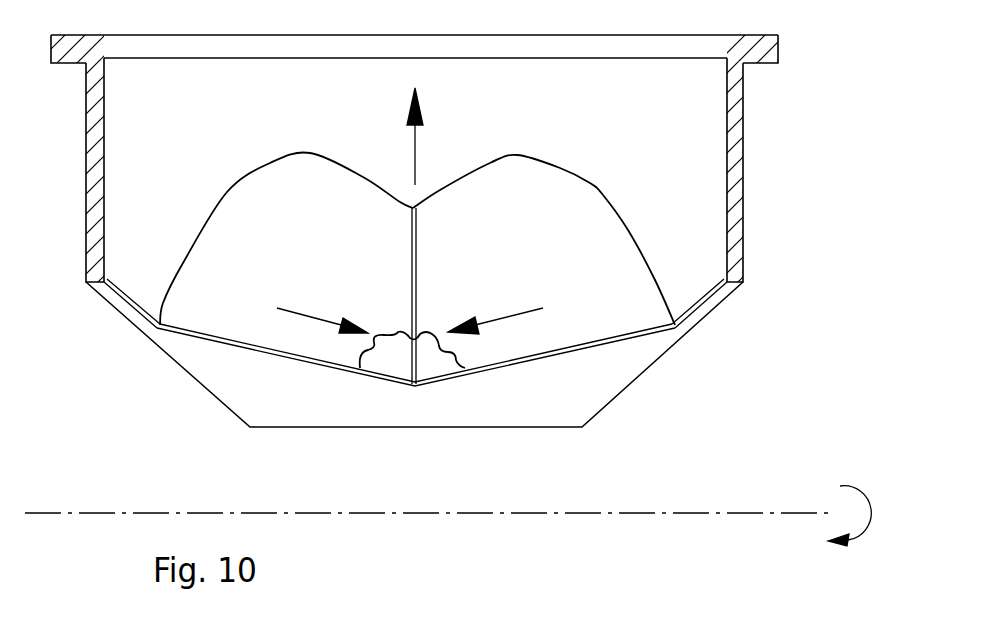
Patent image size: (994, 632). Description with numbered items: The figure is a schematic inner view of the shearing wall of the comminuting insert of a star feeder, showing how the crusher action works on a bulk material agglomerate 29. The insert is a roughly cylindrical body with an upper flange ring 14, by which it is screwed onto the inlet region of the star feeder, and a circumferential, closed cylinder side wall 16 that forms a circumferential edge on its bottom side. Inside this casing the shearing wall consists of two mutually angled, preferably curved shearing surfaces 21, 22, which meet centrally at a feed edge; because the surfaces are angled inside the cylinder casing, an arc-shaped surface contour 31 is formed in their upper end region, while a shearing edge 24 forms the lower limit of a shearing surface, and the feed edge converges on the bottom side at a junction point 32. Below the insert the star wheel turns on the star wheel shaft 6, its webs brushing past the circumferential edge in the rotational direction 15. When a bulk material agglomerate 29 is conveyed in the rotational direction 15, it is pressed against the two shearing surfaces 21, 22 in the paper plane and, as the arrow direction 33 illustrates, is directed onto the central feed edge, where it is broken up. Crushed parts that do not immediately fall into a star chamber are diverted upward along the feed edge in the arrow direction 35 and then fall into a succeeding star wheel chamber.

The star wheel shaft 6 is at (683, 513).
The flange ring 14 is at (758, 58).
The rotational direction 15 is at (862, 531).
The cylinder side wall 16 is at (737, 175).
The shearing surface 21 is at (200, 275).
The shearing surface 22 is at (618, 292).
The shearing edge 24 is at (232, 343).
The bulk material agglomerate 29 is at (398, 368).
The arc-shaped surface contour 31 is at (228, 192).
The junction point 32 is at (414, 386).
The arrow direction 33 is at (415, 267).
The arrow direction 35 is at (415, 148).